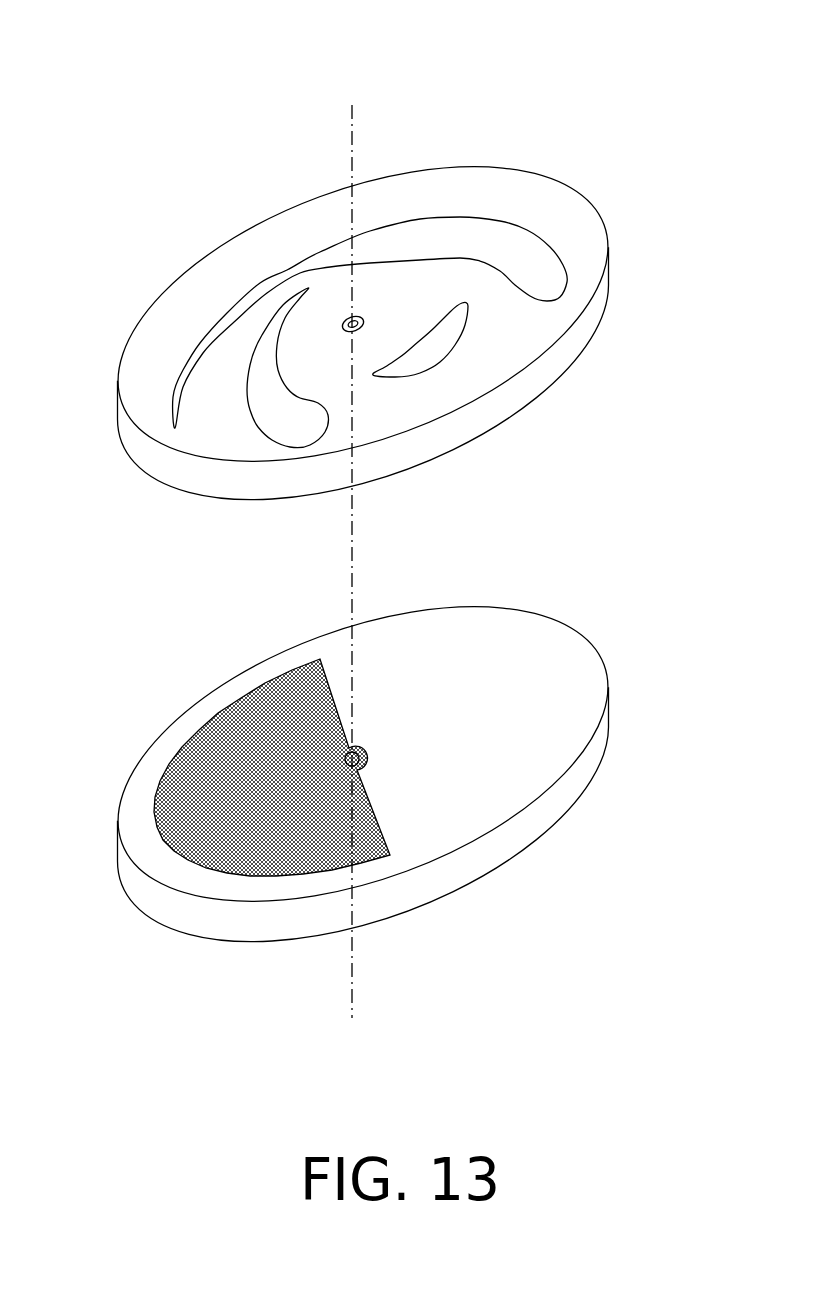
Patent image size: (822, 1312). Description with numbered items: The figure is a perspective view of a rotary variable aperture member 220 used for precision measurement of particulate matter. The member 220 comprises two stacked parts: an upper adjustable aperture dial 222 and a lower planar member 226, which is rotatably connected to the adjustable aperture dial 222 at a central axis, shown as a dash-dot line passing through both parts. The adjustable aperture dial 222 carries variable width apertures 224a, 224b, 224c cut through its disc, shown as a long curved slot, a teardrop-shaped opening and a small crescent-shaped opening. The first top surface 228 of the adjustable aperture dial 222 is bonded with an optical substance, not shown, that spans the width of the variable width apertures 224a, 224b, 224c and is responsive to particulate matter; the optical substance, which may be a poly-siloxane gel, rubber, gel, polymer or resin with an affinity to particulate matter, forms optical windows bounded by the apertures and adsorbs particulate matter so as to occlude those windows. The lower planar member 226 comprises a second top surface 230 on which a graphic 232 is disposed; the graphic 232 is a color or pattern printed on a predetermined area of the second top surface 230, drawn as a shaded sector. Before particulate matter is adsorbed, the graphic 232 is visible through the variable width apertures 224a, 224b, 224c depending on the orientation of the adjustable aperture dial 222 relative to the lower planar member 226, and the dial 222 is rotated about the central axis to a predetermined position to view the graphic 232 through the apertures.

The rotary variable aperture member 220 is at (109, 57).
The adjustable aperture dial 222 is at (603, 218).
The variable width aperture 224a is at (473, 217).
The variable width aperture 224b is at (247, 418).
The variable width aperture 224c is at (423, 370).
The lower planar member 226 is at (590, 642).
The first top surface 228 is at (503, 358).
The second top surface 230 is at (518, 763).
The graphic 232 is at (267, 767).